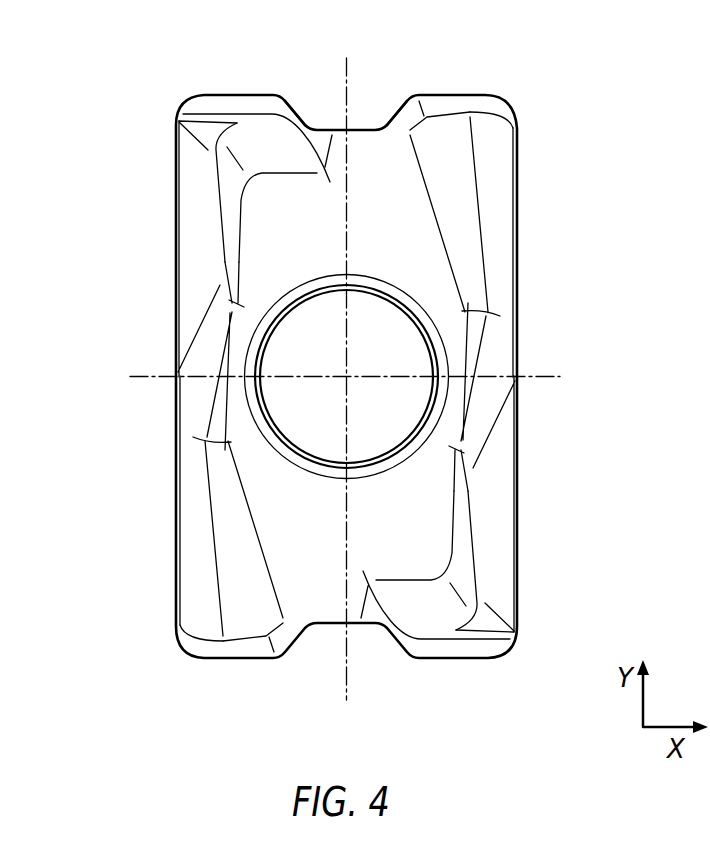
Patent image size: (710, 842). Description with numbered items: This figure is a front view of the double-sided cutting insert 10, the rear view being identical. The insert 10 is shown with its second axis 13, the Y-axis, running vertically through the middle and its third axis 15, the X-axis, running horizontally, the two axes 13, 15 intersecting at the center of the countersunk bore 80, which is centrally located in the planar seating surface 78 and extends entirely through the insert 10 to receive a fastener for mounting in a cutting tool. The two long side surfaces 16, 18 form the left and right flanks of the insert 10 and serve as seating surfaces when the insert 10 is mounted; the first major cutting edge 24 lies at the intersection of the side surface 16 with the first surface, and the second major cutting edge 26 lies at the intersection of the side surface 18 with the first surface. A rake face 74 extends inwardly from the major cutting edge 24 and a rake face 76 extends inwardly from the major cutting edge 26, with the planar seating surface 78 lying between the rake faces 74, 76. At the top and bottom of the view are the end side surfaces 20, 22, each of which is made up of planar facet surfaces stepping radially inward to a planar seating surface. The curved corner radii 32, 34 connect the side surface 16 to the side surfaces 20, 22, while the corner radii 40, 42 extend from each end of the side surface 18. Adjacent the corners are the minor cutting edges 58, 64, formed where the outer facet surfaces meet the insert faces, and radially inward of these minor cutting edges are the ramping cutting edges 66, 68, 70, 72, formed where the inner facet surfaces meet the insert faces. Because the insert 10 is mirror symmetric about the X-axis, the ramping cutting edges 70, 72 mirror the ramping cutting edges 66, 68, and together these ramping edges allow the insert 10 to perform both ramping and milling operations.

The cutting insert 10 is at (648, 113).
The second axis 13 is at (347, 85).
The third axis 15 is at (541, 376).
The side surface 16 is at (548, 321).
The side surface 18 is at (135, 250).
The side surface 20 is at (388, 72).
The side surface 22 is at (332, 661).
The first major cutting edge 24 is at (518, 452).
The second major cutting edge 26 is at (175, 315).
The corner radius 32 is at (510, 95).
The corner radius 34 is at (514, 652).
The corner radius 40 is at (181, 93).
The corner radius 42 is at (181, 653).
The minor cutting edge 58 is at (452, 95).
The minor cutting edge 64 is at (230, 658).
The ramping cutting edge 66 is at (390, 124).
The ramping cutting edge 68 is at (293, 111).
The ramping cutting edge 70 is at (403, 642).
The ramping cutting edge 72 is at (292, 642).
The rake face 74 is at (497, 508).
The rake face 76 is at (190, 253).
The planar seating surface 78 is at (400, 246).
The countersunk bore 80 is at (291, 319).